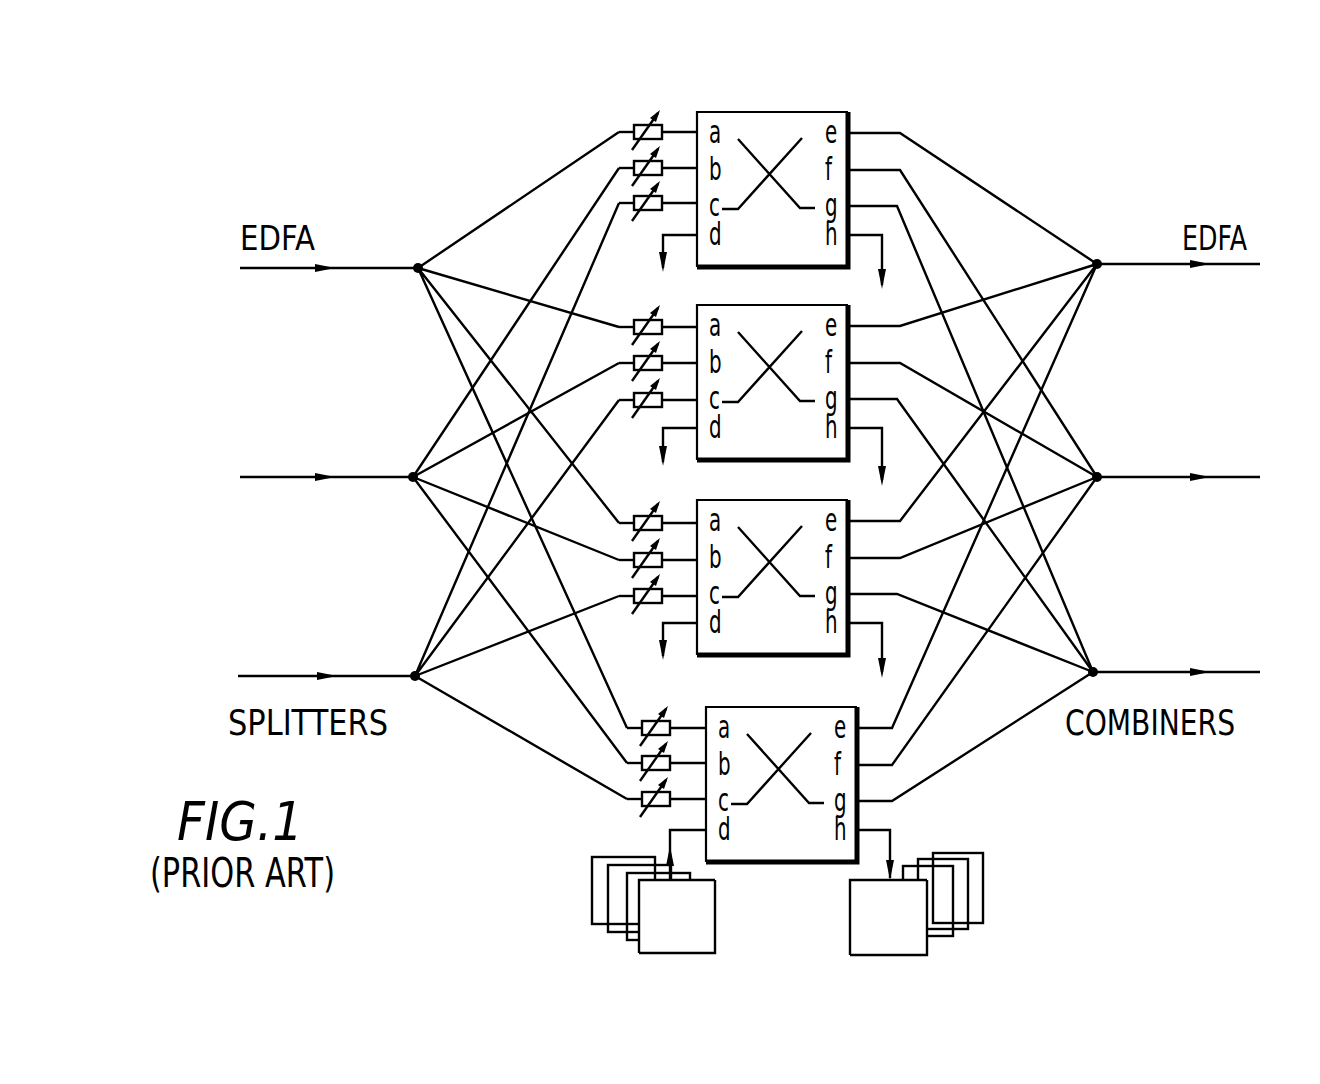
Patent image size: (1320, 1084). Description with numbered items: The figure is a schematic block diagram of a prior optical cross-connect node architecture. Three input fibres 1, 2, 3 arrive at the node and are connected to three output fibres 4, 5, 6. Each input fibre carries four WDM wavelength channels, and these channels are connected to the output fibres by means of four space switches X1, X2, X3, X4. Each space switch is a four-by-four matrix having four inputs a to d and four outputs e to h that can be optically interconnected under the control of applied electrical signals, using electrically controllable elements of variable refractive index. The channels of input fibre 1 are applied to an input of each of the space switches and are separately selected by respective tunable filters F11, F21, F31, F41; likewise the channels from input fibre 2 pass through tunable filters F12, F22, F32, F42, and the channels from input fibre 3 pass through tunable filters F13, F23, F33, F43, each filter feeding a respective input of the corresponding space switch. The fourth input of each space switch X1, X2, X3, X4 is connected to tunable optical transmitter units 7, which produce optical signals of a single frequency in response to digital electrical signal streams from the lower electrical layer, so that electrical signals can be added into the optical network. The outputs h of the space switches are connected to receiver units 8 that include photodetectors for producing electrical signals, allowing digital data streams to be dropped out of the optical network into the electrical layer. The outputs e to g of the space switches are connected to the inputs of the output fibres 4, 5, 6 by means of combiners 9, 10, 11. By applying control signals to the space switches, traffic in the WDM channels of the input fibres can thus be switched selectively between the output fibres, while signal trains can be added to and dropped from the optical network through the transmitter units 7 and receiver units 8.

The input fibre 1 is at (267, 268).
The input fibre 2 is at (262, 477).
The input fibre 3 is at (255, 676).
The output fibre 4 is at (1243, 265).
The output fibre 5 is at (1243, 478).
The output fibre 6 is at (1243, 673).
The tunable optical transmitter units 7 is at (718, 914).
The receiver units 8 is at (848, 912).
The combiner 9 is at (1097, 264).
The combiner 10 is at (1093, 672).
The combiner 11 is at (1097, 477).
The space switch X1 is at (848, 114).
The space switch X2 is at (703, 305).
The space switch X3 is at (703, 500).
The space switch X4 is at (733, 707).
The tunable filter F11 is at (636, 127).
The tunable filter F12 is at (635, 171).
The tunable filter F13 is at (632, 208).
The tunable filter F21 is at (634, 327).
The tunable filter F22 is at (634, 366).
The tunable filter F23 is at (634, 403).
The tunable filter F31 is at (632, 523).
The tunable filter F32 is at (632, 561).
The tunable filter F33 is at (632, 598).
The tunable filter F41 is at (642, 735).
The tunable filter F42 is at (642, 772).
The tunable filter F43 is at (642, 808).